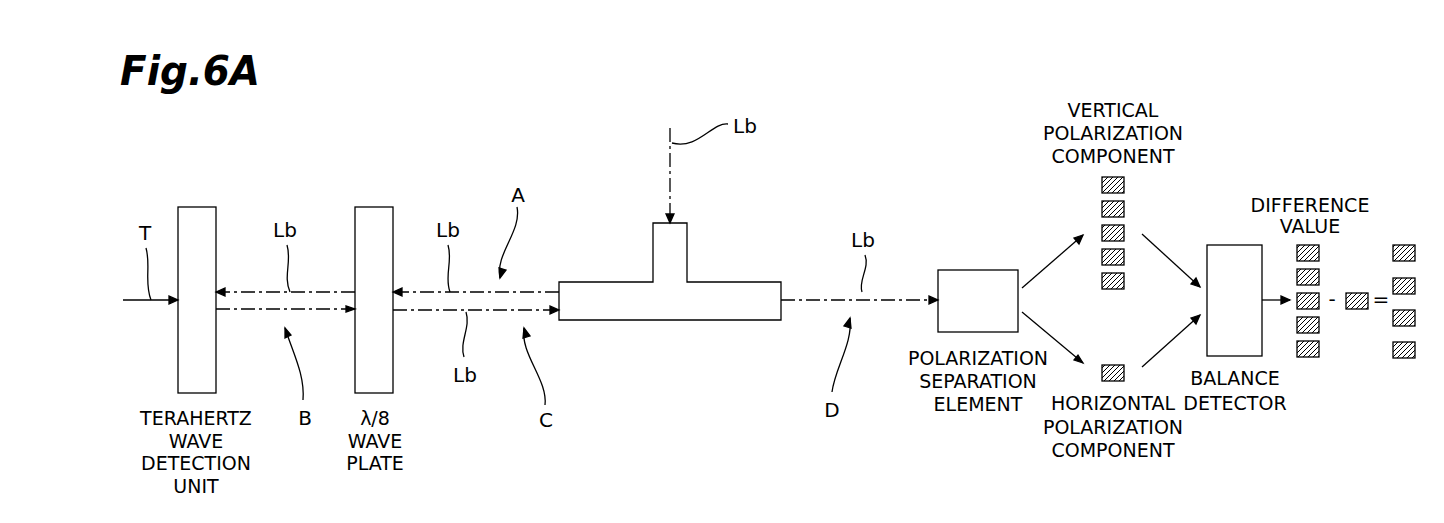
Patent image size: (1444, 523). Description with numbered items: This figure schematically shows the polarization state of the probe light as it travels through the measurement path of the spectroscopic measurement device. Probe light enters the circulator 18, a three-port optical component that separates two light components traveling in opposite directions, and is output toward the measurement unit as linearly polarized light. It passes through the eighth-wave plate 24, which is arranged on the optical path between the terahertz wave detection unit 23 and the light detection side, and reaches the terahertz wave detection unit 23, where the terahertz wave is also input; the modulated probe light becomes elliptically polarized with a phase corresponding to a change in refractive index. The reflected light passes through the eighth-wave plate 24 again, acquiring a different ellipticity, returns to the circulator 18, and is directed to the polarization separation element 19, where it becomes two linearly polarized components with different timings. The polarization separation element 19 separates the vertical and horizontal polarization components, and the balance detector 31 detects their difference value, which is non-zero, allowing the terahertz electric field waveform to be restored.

The terahertz wave detection unit 23 is at (200, 207).
The λ/8 wave plate 24 is at (377, 207).
The circulator 18 is at (670, 320).
The polarization separation element 19 is at (978, 270).
The balance detector 31 is at (1236, 245).